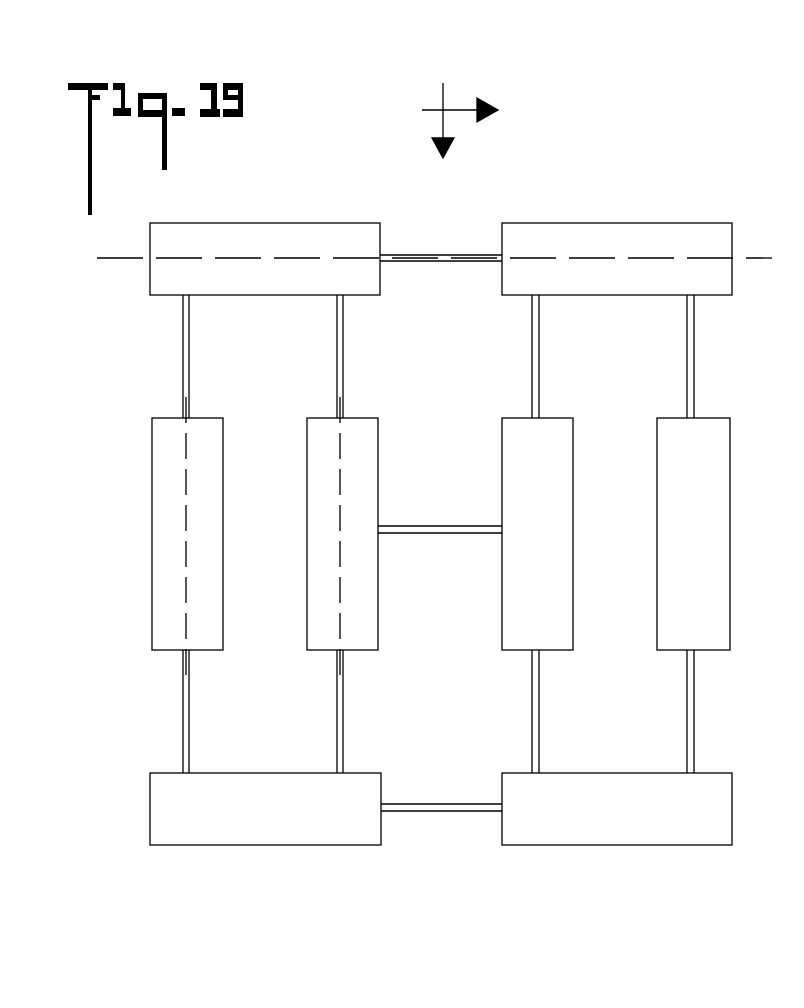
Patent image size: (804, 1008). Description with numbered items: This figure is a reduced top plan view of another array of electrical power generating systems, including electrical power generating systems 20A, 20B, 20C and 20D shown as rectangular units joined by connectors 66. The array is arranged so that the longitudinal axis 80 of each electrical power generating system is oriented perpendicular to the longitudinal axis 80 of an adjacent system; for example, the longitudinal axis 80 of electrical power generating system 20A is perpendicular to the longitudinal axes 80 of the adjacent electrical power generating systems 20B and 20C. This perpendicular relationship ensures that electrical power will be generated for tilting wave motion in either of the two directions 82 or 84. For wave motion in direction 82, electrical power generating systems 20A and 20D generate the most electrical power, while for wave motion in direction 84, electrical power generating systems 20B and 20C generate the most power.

The electrical power generating system 20A is at (296, 192).
The electrical power generating system 20B is at (127, 456).
The electrical power generating system 20C is at (403, 456).
The electrical power generating system 20D is at (672, 190).
The connector 66 is at (443, 256).
The longitudinal axis 80 is at (122, 259).
The direction 82 is at (444, 109).
The direction 84 is at (444, 108).